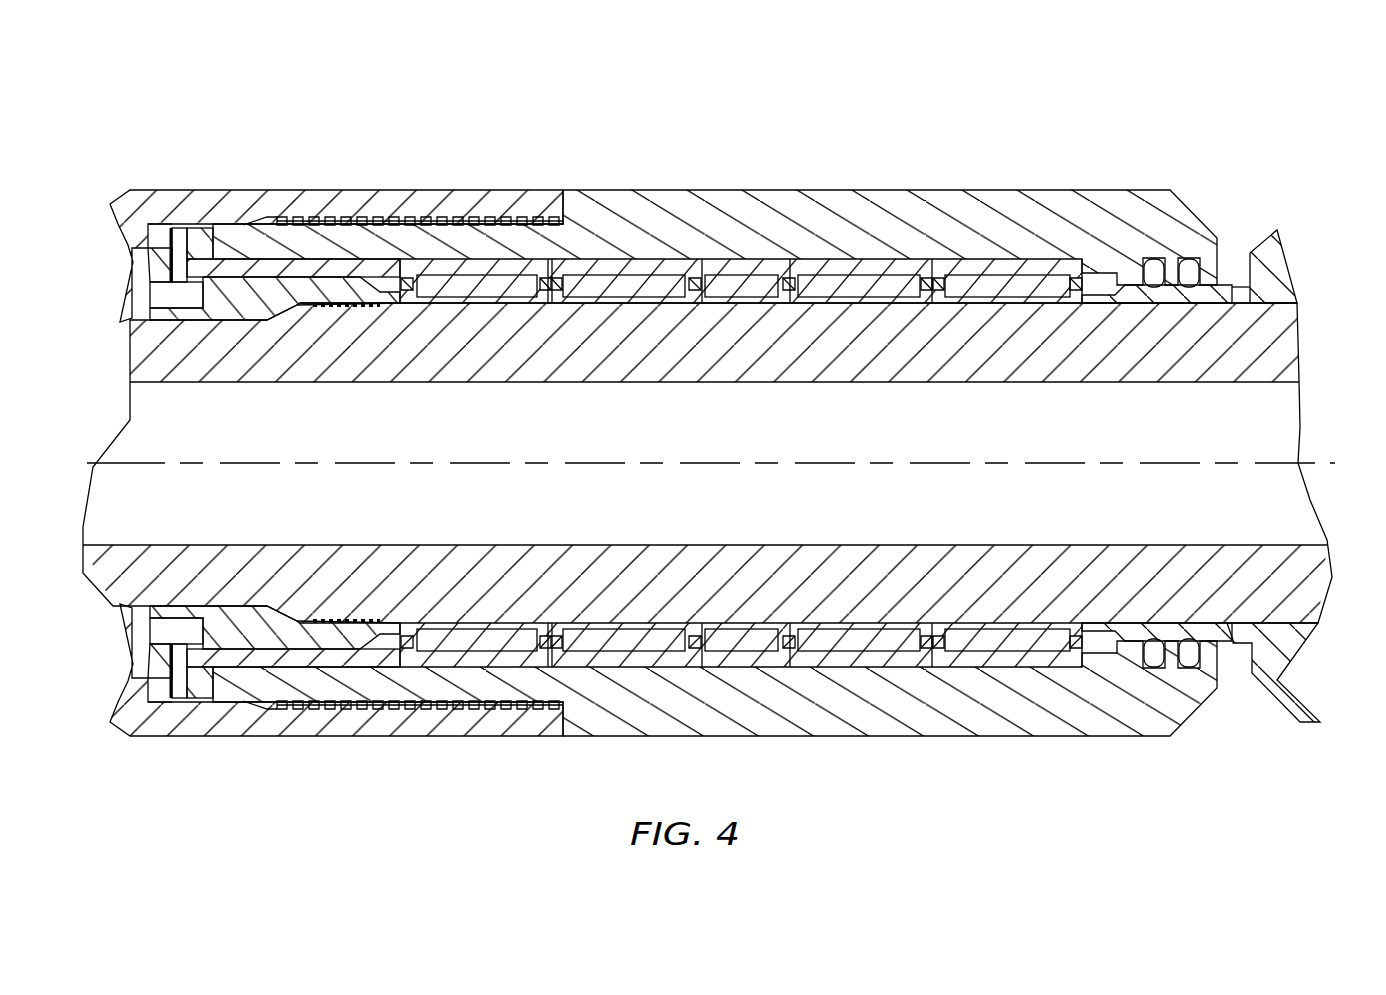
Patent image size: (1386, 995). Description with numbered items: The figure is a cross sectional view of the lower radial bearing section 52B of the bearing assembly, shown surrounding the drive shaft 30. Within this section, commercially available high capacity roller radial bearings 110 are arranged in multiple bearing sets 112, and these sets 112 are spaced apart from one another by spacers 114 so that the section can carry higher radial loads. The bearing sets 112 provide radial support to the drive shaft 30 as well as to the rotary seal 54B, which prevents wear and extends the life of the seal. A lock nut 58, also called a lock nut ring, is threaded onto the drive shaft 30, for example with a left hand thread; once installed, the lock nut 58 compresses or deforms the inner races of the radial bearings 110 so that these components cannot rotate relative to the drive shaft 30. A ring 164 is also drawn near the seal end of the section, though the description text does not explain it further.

The lower radial bearing section 52B is at (166, 99).
The lock nut 58 is at (267, 288).
The radial bearings 110 is at (470, 280).
The spacers 114 is at (735, 258).
The rotary seal 54B is at (1188, 256).
The retainer ring 164 is at (1195, 297).
The bearing sets 112 is at (553, 319).
The drive shaft 30 is at (1157, 367).